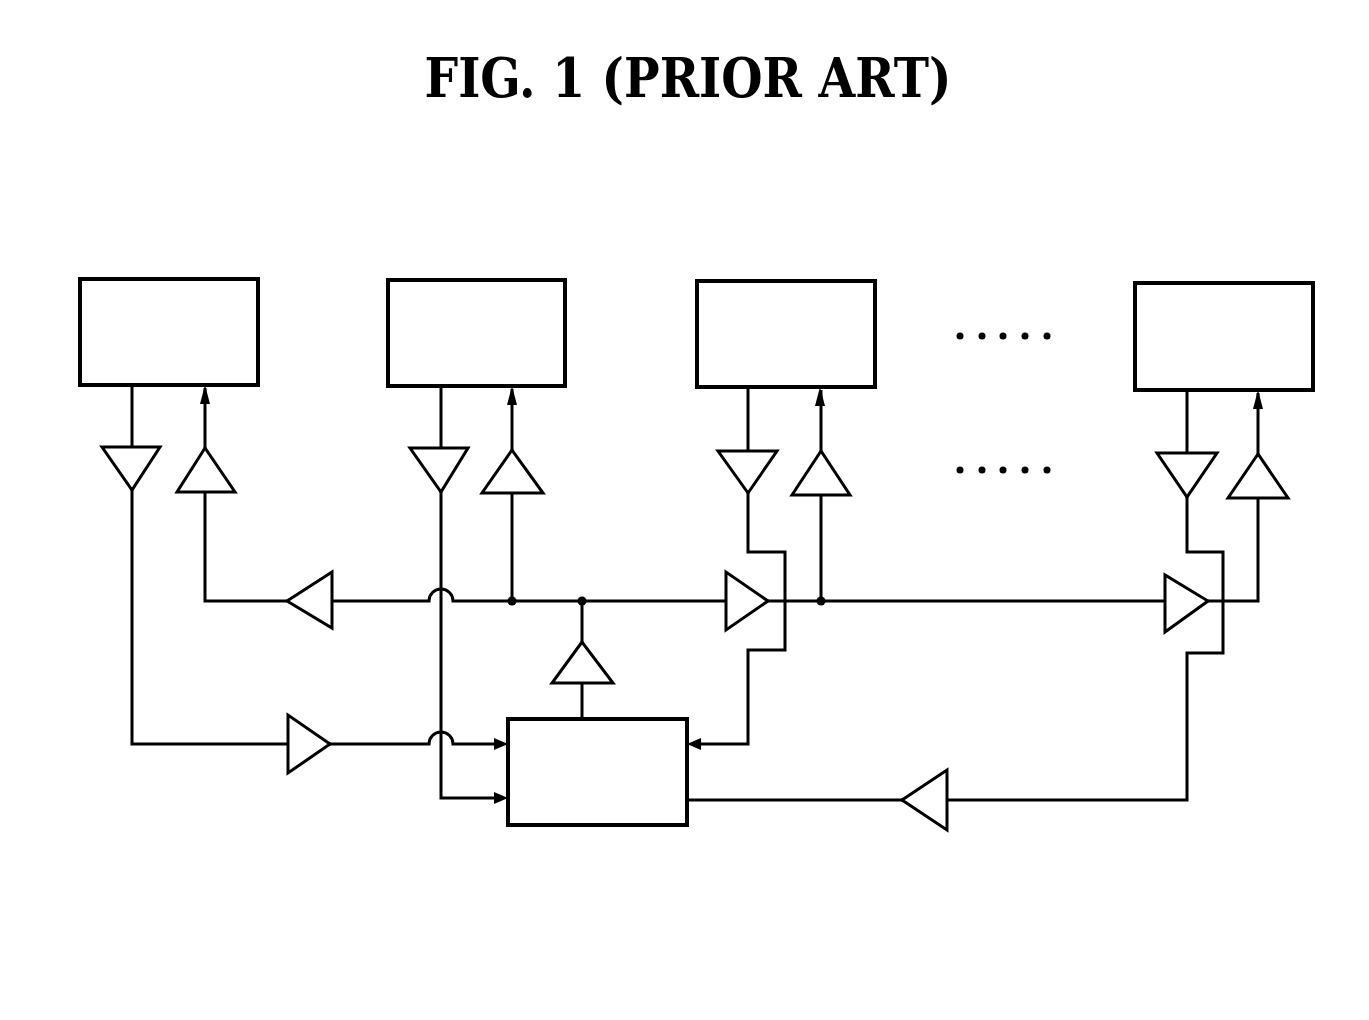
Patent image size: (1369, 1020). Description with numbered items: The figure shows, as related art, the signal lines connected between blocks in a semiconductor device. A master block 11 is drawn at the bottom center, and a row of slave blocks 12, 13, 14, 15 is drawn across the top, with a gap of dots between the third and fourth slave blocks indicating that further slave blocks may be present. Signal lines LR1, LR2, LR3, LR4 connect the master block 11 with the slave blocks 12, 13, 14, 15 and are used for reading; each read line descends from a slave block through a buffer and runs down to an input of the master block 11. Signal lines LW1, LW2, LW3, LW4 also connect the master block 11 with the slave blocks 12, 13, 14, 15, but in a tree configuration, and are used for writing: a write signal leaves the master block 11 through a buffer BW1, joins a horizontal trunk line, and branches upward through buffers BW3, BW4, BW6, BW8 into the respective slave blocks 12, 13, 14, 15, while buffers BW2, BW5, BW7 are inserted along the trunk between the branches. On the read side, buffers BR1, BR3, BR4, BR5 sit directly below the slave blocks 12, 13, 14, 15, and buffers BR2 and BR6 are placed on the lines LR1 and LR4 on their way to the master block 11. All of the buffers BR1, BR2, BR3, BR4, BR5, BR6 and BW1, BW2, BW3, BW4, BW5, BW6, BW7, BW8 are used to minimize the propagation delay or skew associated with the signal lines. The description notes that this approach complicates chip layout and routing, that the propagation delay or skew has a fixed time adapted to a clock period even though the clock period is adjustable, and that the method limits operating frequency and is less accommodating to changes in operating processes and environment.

The master block 11 is at (600, 718).
The slave block 12 is at (170, 278).
The slave block 13 is at (478, 279).
The slave block 14 is at (787, 280).
The slave block 15 is at (1222, 282).
The buffer BR1 is at (118, 470).
The buffer BR2 is at (311, 726).
The buffer BR3 is at (422, 470).
The buffer BR4 is at (728, 472).
The buffer BR5 is at (1170, 475).
The buffer BR6 is at (932, 778).
The buffer BW1 is at (562, 664).
The buffer BW2 is at (313, 582).
The buffer BW3 is at (220, 470).
The buffer BW4 is at (528, 470).
The buffer BW5 is at (726, 588).
The buffer BW6 is at (835, 472).
The buffer BW7 is at (1165, 588).
The buffer BW8 is at (1272, 475).
The signal line LR1 is at (132, 607).
The signal line LR2 is at (441, 676).
The signal line LR3 is at (748, 680).
The signal line LR4 is at (1187, 711).
The signal line LW1 is at (203, 574).
The signal line LW2 is at (512, 547).
The signal line LW3 is at (821, 547).
The signal line LW4 is at (1258, 551).